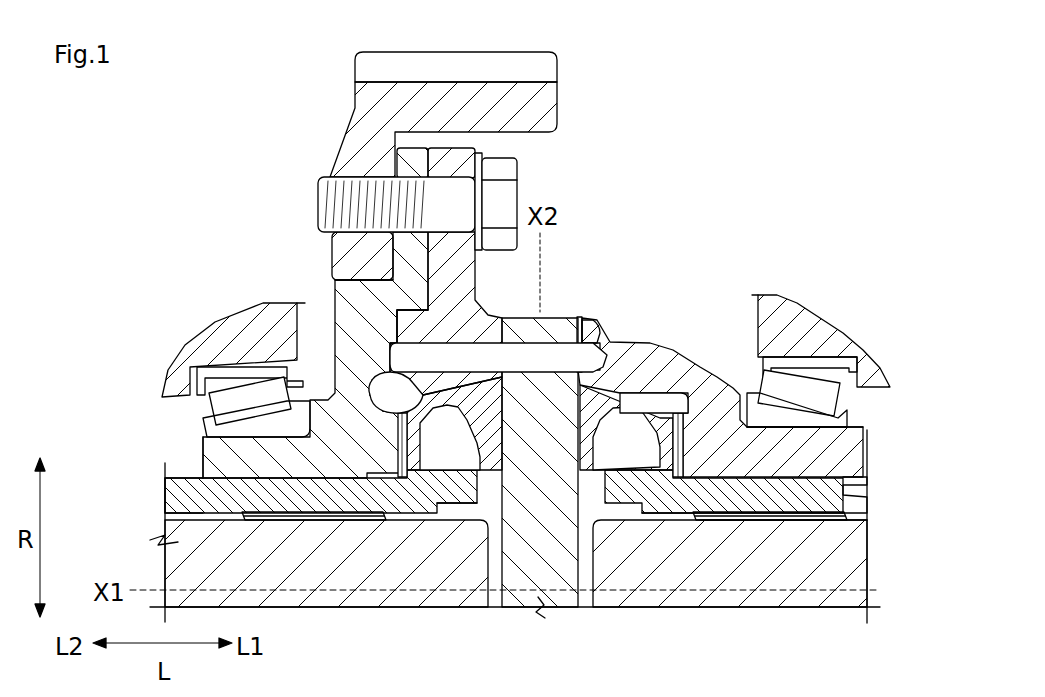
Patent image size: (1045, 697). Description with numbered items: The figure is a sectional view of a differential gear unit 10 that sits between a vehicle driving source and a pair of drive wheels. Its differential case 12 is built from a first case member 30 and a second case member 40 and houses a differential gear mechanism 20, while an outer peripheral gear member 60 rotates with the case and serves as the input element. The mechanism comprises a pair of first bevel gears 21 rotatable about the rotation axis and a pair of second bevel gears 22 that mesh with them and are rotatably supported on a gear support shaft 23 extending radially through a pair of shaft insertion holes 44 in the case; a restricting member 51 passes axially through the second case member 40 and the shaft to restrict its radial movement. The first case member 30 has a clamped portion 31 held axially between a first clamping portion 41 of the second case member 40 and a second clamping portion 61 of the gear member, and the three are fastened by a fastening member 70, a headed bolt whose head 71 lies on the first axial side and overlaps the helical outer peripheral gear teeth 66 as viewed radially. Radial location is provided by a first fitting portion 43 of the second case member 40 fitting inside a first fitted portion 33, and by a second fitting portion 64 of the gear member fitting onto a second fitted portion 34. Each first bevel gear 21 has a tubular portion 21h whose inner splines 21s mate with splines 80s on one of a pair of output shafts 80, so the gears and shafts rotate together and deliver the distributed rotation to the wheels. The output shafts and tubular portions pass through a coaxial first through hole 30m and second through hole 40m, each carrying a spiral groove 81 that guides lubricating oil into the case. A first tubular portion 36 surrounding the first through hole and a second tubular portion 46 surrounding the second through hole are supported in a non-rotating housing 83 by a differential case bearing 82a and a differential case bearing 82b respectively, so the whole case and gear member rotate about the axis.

The differential gear unit 10 is at (746, 97).
The differential case 12 is at (507, 277).
The differential gear mechanism 20 is at (661, 401).
The first bevel gear 21 is at (417, 453).
The tubular portion 21h is at (262, 520).
The splines 21s is at (780, 521).
The second bevel gear 22 is at (470, 453).
The gear support shaft 23 is at (553, 330).
The first case member 30 is at (318, 334).
The first through hole 30m is at (167, 493).
The clamped portion 31 is at (409, 158).
The first fitted portion 33 is at (407, 330).
The second fitted portion 34 is at (360, 283).
The first tubular portion 36 is at (247, 421).
The second case member 40 is at (694, 325).
The second through hole 40m is at (845, 492).
The first clamping portion 41 is at (447, 158).
The first fitting portion 43 is at (457, 320).
The shaft insertion hole 44 is at (577, 317).
The second tubular portion 46 is at (800, 450).
The restricting member 51 is at (610, 337).
The outer peripheral gear member 60 is at (348, 43).
The second clamping portion 61 is at (362, 158).
The second fitting portion 64 is at (337, 252).
The outer peripheral gear teeth 66 is at (523, 63).
The fastening member 70 is at (330, 200).
The head 71 is at (521, 192).
The output shaft 80 is at (200, 563).
The splines 80s is at (237, 448).
The spiral groove 81 is at (300, 521).
The differential case bearing 82a is at (232, 392).
The differential case bearing 82b is at (820, 390).
The housing 83 is at (250, 337).